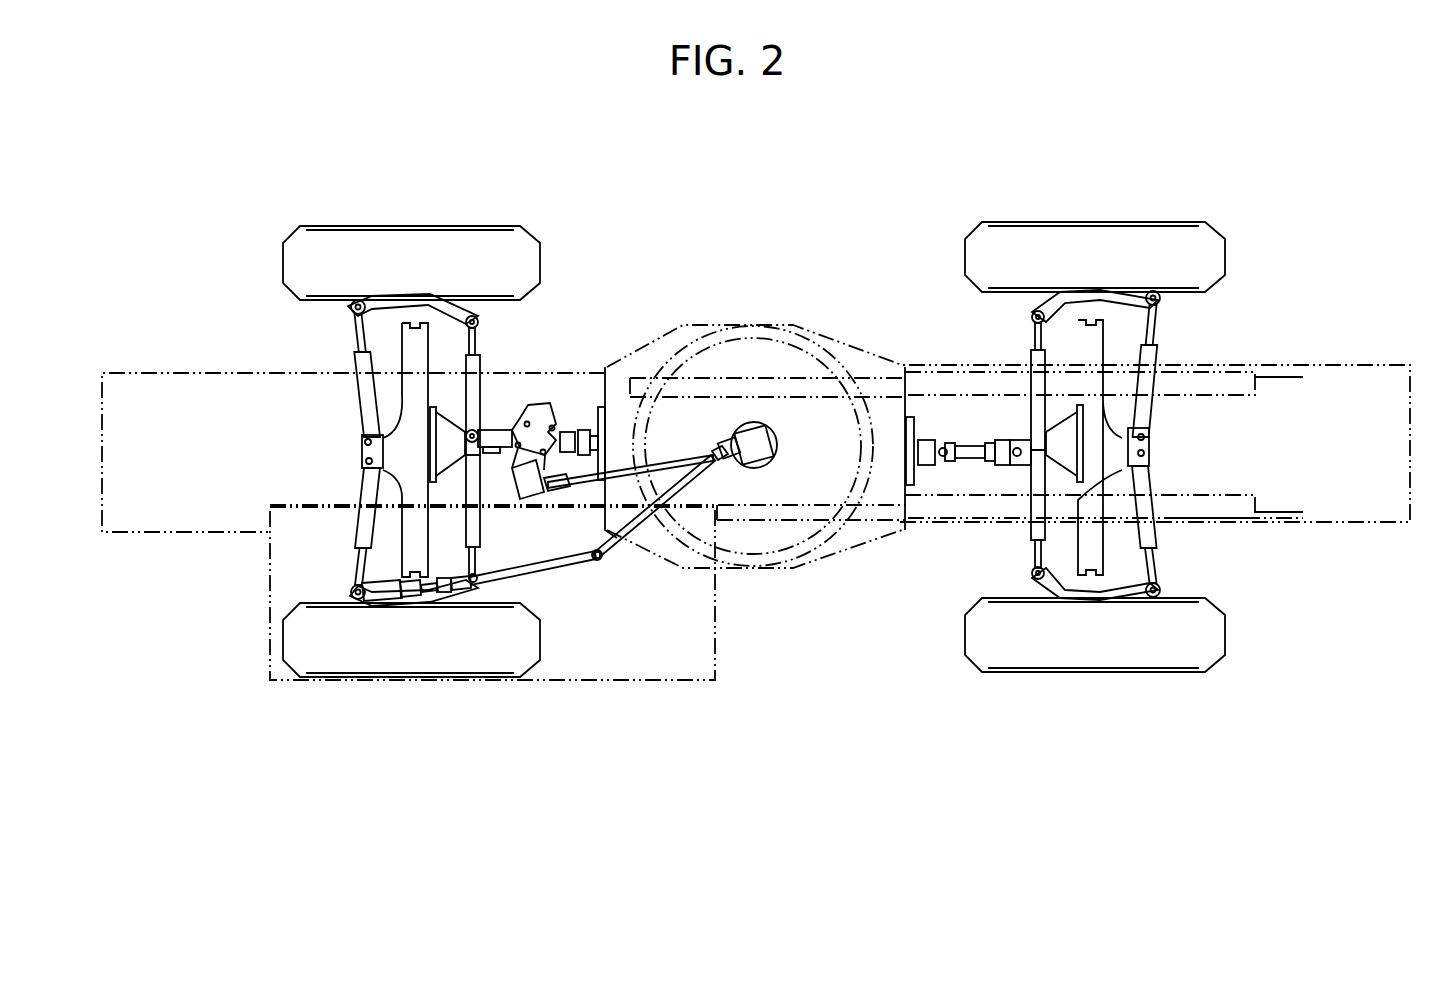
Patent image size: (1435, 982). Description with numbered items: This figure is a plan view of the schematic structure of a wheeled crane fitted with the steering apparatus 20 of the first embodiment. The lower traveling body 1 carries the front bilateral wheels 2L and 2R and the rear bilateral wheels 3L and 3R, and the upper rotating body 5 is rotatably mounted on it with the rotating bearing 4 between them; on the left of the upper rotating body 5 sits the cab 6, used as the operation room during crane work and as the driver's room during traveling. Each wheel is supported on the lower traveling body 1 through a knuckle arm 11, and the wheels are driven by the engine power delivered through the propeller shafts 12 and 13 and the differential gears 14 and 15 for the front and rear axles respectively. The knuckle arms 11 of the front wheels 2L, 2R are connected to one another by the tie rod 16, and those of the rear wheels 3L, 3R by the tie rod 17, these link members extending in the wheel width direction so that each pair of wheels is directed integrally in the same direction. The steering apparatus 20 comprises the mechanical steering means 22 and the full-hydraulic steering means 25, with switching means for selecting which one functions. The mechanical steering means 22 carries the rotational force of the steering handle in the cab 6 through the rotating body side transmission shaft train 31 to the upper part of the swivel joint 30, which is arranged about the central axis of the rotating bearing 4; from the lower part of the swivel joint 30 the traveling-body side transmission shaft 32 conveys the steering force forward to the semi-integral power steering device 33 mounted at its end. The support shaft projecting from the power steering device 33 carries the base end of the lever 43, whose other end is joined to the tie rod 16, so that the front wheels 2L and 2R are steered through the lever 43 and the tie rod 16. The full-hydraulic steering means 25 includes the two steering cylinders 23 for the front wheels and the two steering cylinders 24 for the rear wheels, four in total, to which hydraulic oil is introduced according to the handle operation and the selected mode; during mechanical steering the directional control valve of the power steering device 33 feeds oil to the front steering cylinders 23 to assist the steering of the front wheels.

The lower traveling body 1 is at (1342, 362).
The front wheel 2R is at (400, 235).
The front wheel 2L is at (404, 660).
The rear wheel 3R is at (1070, 232).
The rear wheel 3L is at (1061, 655).
The rotating bearing 4 is at (822, 326).
The upper rotating body 5 is at (930, 370).
The cab 6 is at (592, 683).
The knuckle arm 11 is at (452, 302).
The propeller shaft 12 is at (582, 403).
The propeller shaft 13 is at (972, 464).
The differential gear 14 is at (443, 444).
The differential gear 15 is at (1082, 440).
The tie rod 16 is at (482, 516).
The tie rod 17 is at (1034, 420).
The steering apparatus 20 is at (632, 605).
The mechanical steering means 22 is at (585, 592).
The steering cylinder 23 is at (358, 406).
The steering cylinder 24 is at (1143, 408).
The full-hydraulic steering means 25 is at (316, 350).
The swivel joint 30 is at (777, 431).
The rotating body side transmission shaft train 31 is at (630, 537).
The traveling-body side transmission shaft 32 is at (665, 468).
The power steering device 33 is at (532, 400).
The lever 43 is at (488, 420).